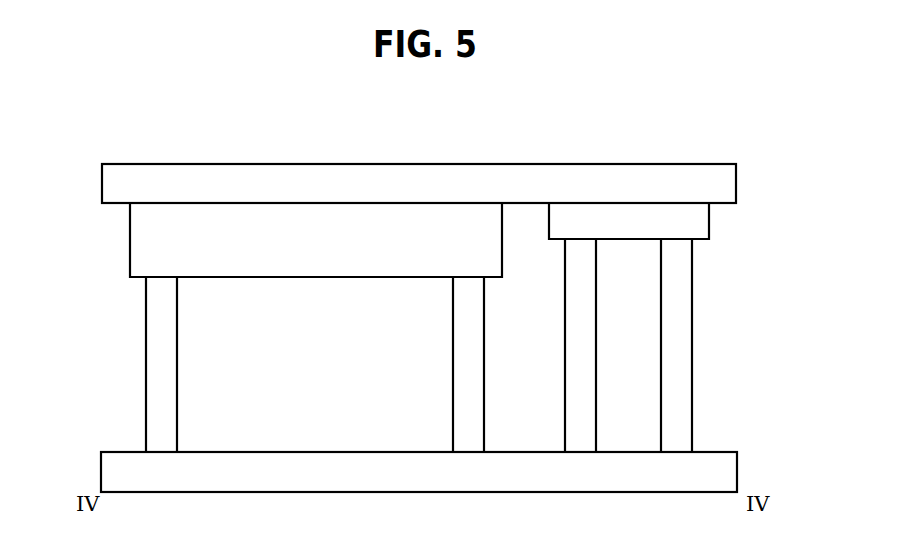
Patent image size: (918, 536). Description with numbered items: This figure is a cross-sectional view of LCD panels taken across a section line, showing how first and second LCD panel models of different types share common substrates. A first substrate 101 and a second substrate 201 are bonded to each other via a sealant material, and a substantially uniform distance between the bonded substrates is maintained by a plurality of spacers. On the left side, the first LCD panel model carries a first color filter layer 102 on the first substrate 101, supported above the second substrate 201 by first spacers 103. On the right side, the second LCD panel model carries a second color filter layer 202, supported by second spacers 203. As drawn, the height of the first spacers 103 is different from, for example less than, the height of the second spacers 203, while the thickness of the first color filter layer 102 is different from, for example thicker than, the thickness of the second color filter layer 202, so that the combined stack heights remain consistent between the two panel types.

The first substrate 101 is at (728, 183).
The first color filter layer 102 is at (137, 241).
The first spacer 103 is at (153, 384).
The second substrate 201 is at (728, 470).
The second color filter layer 202 is at (705, 225).
The second spacer 203 is at (683, 365).